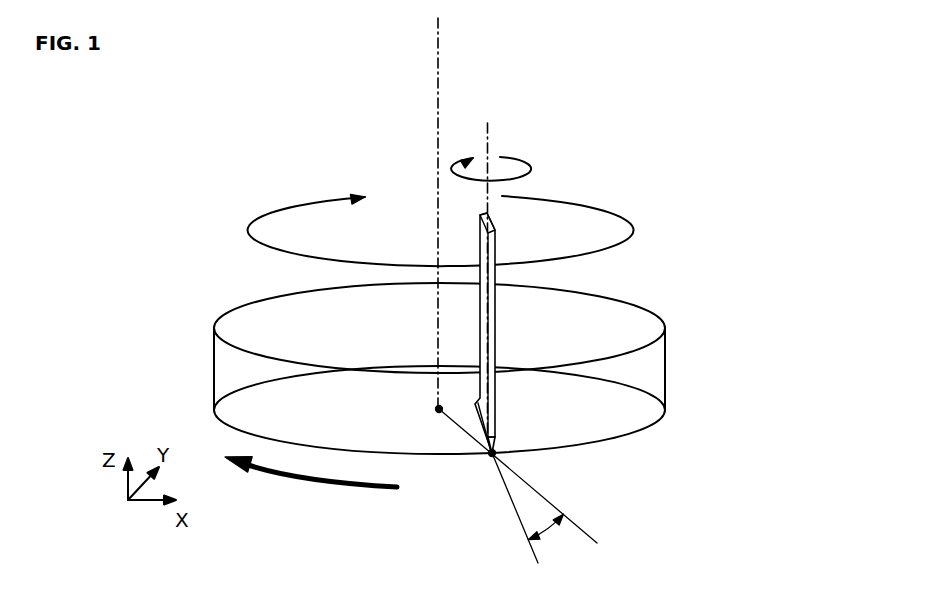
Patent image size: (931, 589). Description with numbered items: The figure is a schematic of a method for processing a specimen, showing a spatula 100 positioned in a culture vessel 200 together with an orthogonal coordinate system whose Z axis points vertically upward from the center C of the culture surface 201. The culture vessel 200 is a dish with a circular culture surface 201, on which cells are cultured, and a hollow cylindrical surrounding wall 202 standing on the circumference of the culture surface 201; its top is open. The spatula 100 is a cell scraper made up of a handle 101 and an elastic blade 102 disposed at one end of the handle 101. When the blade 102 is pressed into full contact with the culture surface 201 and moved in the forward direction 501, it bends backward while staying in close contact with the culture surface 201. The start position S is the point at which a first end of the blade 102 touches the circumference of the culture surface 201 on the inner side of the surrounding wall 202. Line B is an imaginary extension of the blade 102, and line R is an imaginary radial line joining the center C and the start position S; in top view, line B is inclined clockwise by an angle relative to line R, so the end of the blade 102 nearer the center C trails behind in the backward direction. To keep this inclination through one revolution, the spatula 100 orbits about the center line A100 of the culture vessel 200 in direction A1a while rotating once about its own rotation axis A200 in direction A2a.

The spatula 100 is at (522, 333).
The handle 101 is at (492, 336).
The blade 102 is at (497, 440).
The culture vessel 200 is at (476, 366).
The culture surface 201 is at (612, 430).
The surrounding wall 202 is at (665, 364).
The forward direction 501 is at (295, 478).
The center line A100 is at (437, 125).
The rotation axis A200 is at (488, 123).
The direction A1a is at (330, 259).
The direction A2a is at (527, 167).
The center C is at (436, 412).
The start position S is at (490, 457).
The imaginary radial-direction line R is at (551, 500).
The imaginary line B is at (514, 510).